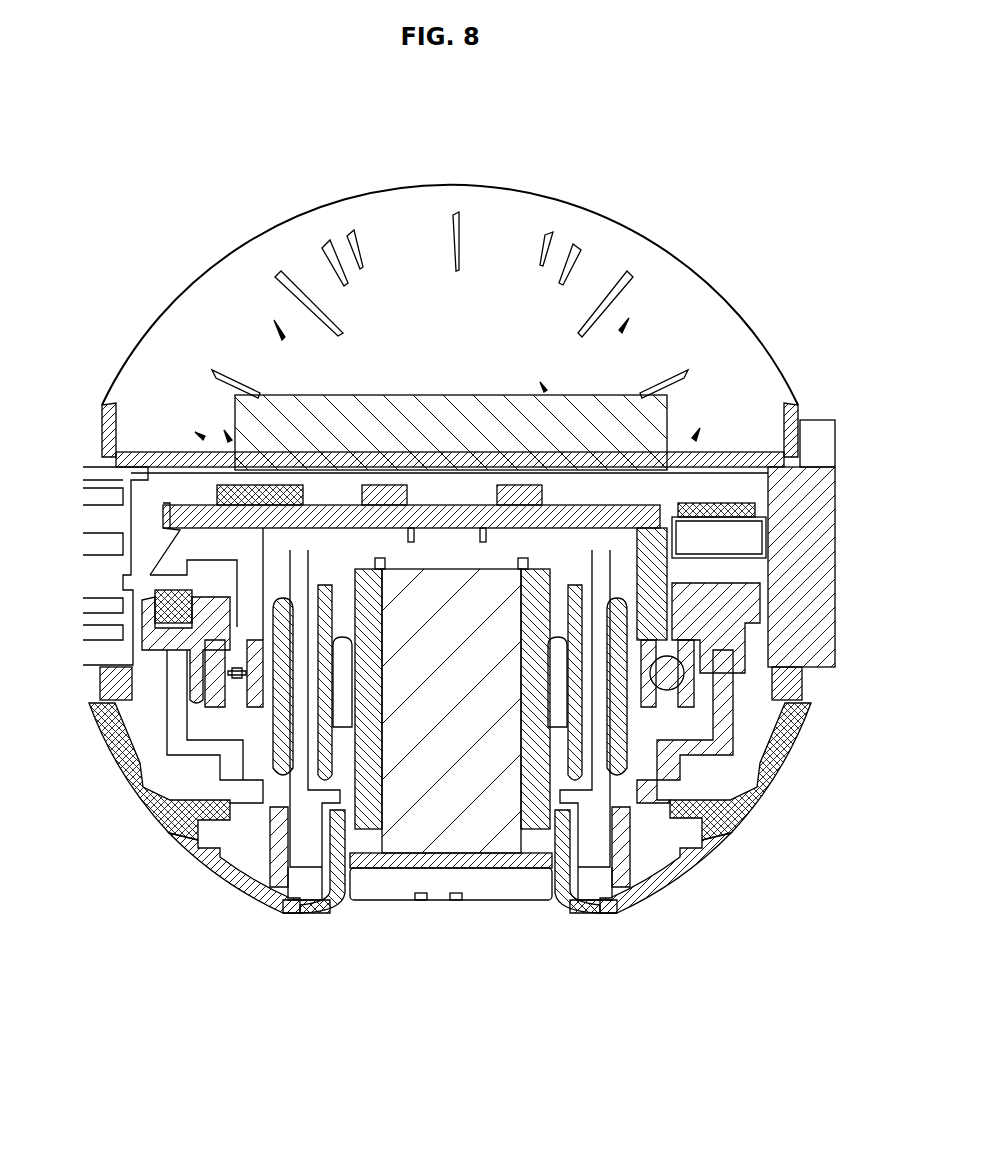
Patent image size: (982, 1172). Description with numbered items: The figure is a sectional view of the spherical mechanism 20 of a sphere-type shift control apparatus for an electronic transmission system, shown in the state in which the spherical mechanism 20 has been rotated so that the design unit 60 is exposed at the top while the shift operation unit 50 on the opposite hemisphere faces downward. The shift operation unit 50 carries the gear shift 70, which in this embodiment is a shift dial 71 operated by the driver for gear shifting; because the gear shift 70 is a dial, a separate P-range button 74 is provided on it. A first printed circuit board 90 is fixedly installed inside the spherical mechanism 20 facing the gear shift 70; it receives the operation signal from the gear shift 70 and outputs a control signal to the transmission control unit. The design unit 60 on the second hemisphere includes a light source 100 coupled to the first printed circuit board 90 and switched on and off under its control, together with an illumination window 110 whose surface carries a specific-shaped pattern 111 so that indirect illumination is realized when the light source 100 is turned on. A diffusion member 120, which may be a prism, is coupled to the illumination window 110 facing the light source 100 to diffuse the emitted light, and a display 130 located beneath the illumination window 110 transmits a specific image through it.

The spherical mechanism 20 is at (766, 803).
The shift operation unit 50 is at (290, 927).
The design unit 60 is at (722, 280).
The gear shift 70 is at (680, 889).
The shift dial 71 is at (118, 775).
The P-range button 74 is at (485, 887).
The first printed circuit board 90 is at (188, 502).
The light source 100 is at (388, 490).
The illumination window 110 is at (232, 275).
The pattern 111 is at (562, 240).
The diffusion member 120 is at (722, 455).
The display 130 is at (432, 415).